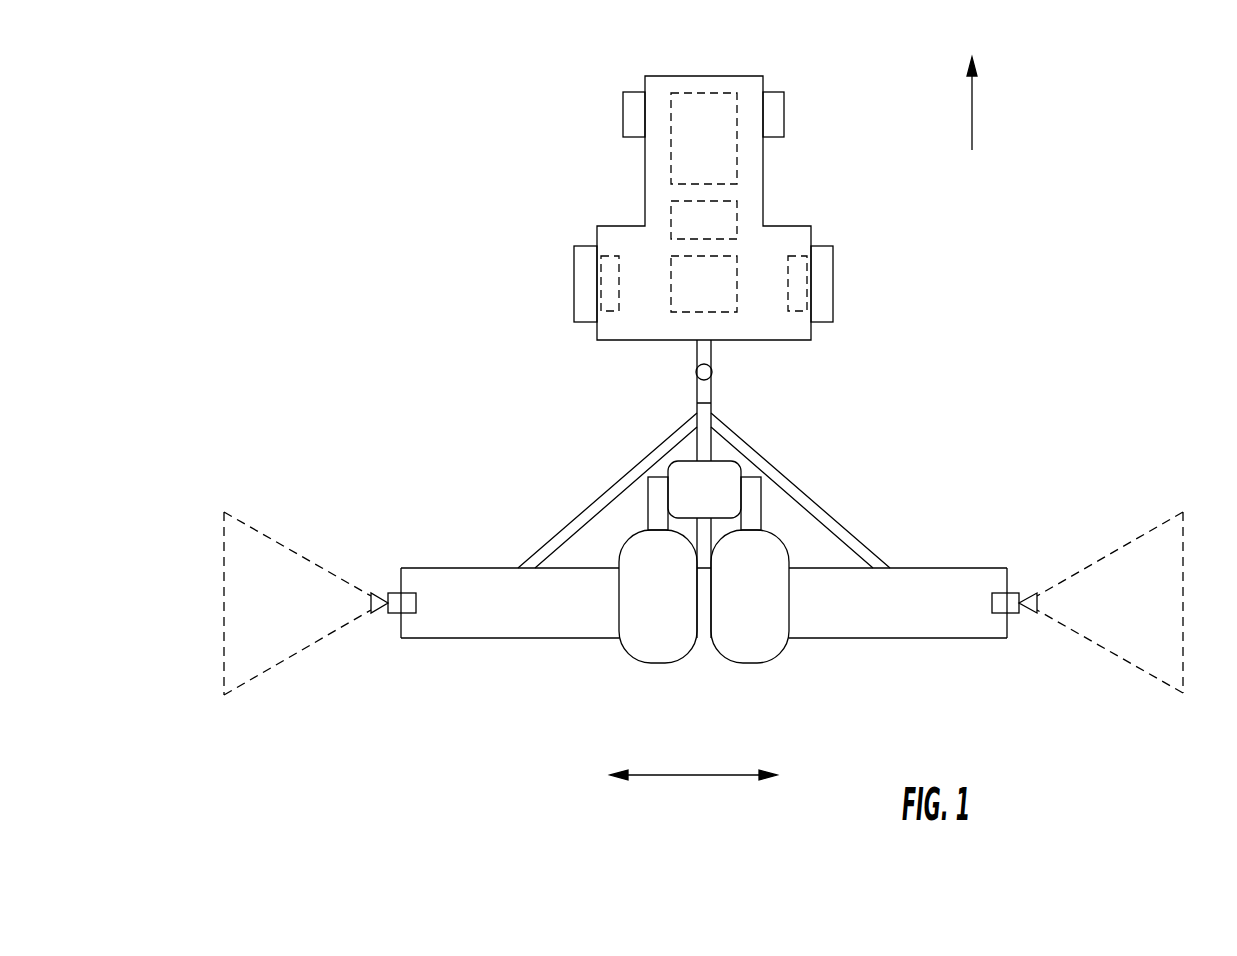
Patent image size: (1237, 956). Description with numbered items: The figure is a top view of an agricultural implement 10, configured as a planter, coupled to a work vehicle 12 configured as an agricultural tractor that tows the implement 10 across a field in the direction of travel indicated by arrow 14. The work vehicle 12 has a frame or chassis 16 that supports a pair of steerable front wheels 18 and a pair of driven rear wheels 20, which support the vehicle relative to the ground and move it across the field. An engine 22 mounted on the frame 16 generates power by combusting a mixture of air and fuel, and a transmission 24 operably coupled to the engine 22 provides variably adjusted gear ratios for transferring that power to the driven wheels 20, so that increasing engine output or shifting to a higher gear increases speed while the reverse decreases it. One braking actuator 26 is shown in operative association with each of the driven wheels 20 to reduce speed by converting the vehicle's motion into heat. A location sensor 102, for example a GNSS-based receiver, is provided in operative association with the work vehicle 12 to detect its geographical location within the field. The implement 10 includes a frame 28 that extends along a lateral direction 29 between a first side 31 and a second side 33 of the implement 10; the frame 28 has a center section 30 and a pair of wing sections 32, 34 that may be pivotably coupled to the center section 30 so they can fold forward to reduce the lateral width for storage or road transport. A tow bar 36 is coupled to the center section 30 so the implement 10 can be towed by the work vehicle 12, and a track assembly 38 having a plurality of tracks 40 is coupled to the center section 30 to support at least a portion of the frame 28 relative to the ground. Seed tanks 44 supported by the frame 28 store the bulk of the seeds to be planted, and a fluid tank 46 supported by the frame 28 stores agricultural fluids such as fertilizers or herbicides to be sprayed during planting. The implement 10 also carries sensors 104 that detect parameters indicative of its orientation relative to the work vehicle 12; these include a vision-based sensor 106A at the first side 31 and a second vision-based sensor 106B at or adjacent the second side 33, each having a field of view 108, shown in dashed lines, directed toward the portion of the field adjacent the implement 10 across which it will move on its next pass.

The agricultural implement 10 is at (410, 422).
The work vehicle 12 is at (452, 83).
The direction of travel 14 is at (972, 112).
The frame 16 is at (645, 178).
The steerable front wheels 18 is at (623, 117).
The driven rear wheels 20 is at (574, 295).
The engine 22 is at (682, 92).
The transmission 24 is at (737, 215).
The braking actuator 26 is at (606, 256).
The frame 28 is at (704, 598).
The lateral direction 29 is at (682, 775).
The center section 30 is at (697, 448).
The first side 31 is at (410, 557).
The wing section 32 is at (510, 590).
The second side 33 is at (958, 560).
The wing section 34 is at (898, 573).
The tow bar 36 is at (695, 387).
The track assembly 38 is at (765, 493).
The tracks 40 is at (648, 505).
The seed tanks 44 is at (757, 663).
The fluid tank 46 is at (723, 458).
The location sensor 102 is at (737, 300).
The sensors 104 is at (387, 588).
The vision-based sensor 106A is at (398, 613).
The vision-based sensor 106B is at (1010, 613).
The field of view 108 is at (275, 535).